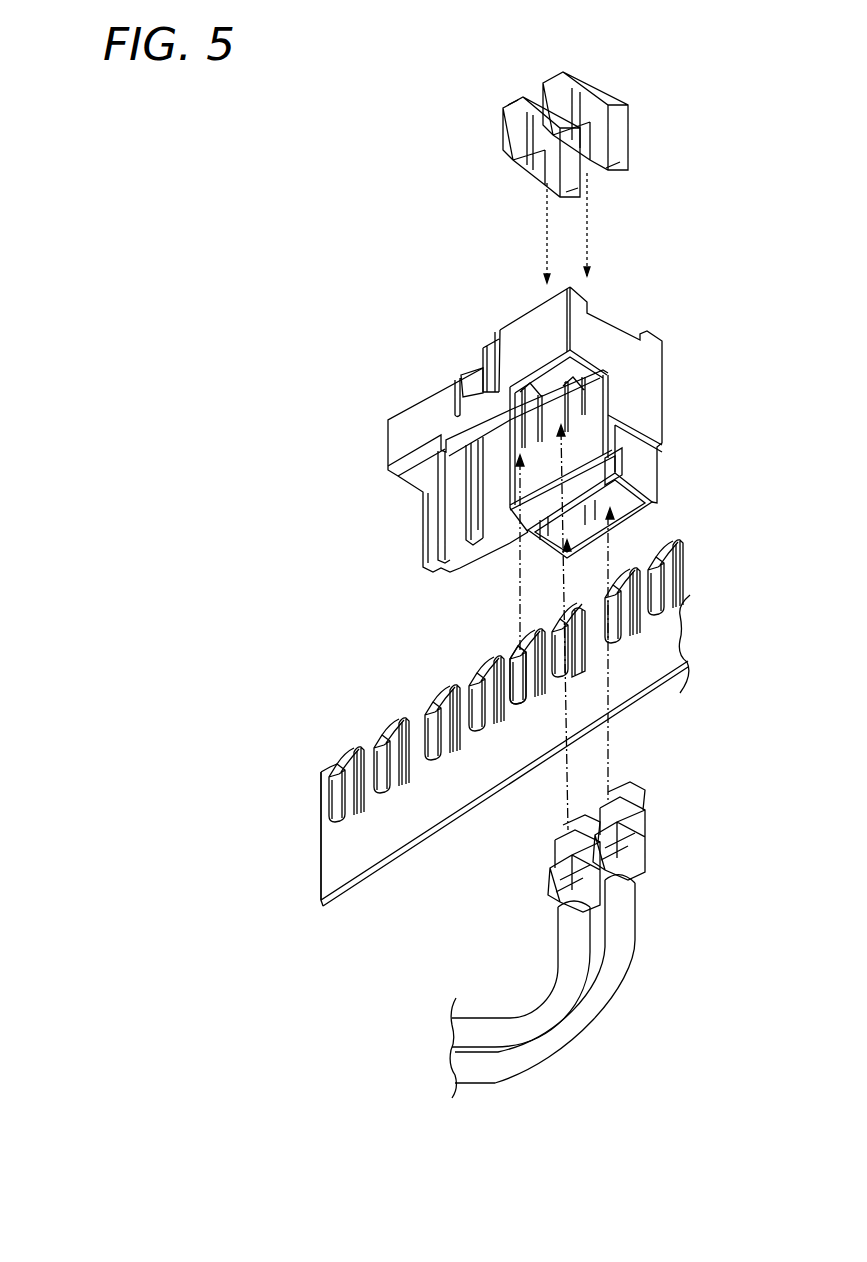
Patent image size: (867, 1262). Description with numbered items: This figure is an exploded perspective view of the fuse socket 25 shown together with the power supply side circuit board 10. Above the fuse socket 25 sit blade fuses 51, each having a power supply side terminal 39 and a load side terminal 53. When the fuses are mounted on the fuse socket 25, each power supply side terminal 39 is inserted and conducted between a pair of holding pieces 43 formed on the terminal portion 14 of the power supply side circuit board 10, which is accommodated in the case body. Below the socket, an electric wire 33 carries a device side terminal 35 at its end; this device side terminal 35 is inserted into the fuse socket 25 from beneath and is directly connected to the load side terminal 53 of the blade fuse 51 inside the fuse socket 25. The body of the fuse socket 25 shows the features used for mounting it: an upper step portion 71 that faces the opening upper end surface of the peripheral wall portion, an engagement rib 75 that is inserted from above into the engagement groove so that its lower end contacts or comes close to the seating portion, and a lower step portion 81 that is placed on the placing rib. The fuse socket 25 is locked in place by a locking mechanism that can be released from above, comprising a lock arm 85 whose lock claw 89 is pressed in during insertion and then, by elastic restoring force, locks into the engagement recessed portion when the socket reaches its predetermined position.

The power supply side circuit board 10 is at (666, 650).
The terminal portion 14 is at (372, 722).
The fuse socket 25 is at (383, 425).
The electric wire 33 is at (530, 1023).
The device side terminal 35 is at (549, 877).
The power supply side terminal 39 is at (565, 122).
The holding pieces 43 is at (512, 653).
The blade fuse 51 is at (553, 83).
The load side terminal 53 is at (588, 182).
The upper step portion 71 is at (612, 390).
The engagement rib 75 is at (617, 433).
The lower step portion 81 is at (642, 435).
The lock arm 85 is at (490, 343).
The lock claw 89 is at (477, 383).